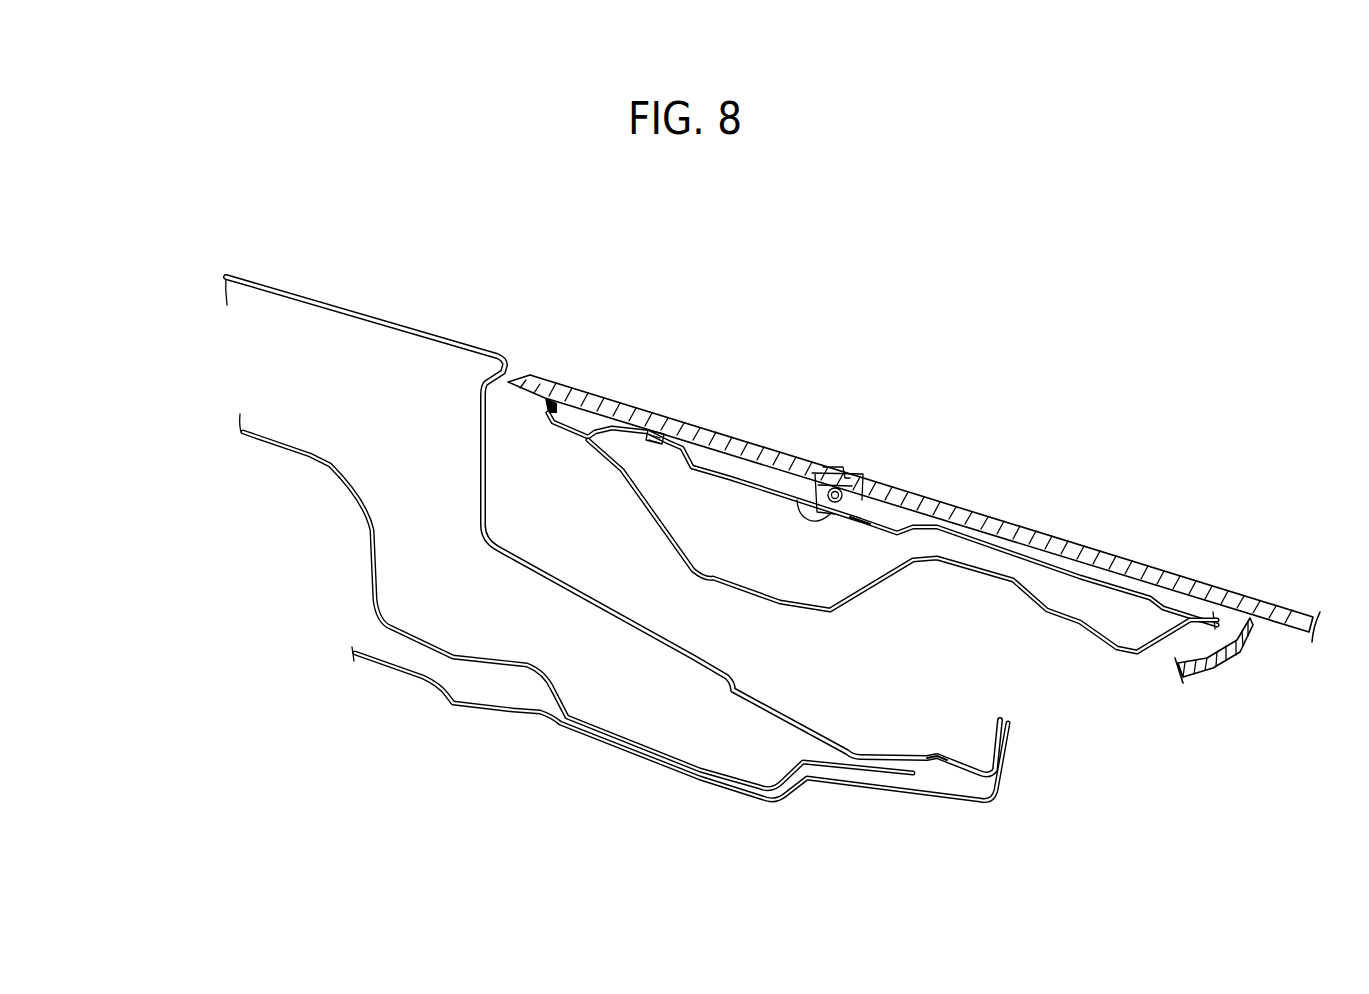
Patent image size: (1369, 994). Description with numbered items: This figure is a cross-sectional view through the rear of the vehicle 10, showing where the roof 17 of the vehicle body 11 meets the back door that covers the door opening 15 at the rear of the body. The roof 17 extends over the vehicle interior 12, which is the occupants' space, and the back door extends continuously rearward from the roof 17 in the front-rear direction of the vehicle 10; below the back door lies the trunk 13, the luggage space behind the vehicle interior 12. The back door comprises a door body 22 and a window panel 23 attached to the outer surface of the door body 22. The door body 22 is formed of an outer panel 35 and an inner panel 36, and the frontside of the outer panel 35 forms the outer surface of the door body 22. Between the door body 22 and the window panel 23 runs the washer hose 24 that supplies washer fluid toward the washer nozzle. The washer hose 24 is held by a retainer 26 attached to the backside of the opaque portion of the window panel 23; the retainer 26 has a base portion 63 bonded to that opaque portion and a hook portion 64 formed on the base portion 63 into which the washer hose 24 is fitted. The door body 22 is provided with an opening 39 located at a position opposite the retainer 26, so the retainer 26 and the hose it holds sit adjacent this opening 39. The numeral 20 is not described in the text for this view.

The vehicle 10 is at (193, 120).
The vehicle body 11 is at (248, 203).
The vehicle interior 12 is at (238, 607).
The trunk 13 is at (1143, 777).
The door opening 15 is at (947, 757).
The roof 17 is at (316, 298).
The roof assembly 20 is at (610, 283).
The door body 22 is at (1132, 461).
The window panel 23 is at (1123, 557).
The washer hose 24 is at (863, 493).
The retainer 26 is at (886, 404).
The outer panel 35 is at (978, 533).
The inner panel 36 is at (1023, 585).
The opening 39 is at (860, 520).
The base portion 63 is at (825, 468).
The hook portion 64 is at (797, 500).